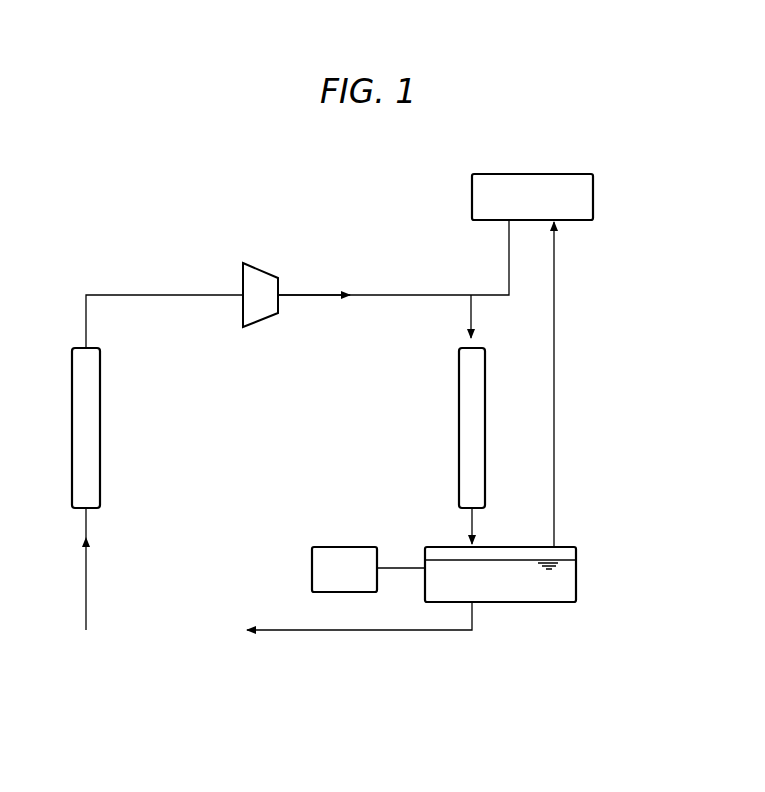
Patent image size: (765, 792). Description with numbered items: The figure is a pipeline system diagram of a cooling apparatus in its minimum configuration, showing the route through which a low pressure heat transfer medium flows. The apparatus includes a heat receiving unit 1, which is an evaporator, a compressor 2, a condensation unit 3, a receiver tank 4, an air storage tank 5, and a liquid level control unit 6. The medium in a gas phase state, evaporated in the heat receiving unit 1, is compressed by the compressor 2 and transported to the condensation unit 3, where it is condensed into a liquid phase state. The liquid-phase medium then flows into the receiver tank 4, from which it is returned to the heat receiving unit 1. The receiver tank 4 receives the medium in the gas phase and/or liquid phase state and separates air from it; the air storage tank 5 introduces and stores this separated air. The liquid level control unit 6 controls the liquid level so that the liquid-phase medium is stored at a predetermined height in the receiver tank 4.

The heat receiving unit 1 is at (95, 430).
The compressor 2 is at (266, 275).
The condensation unit 3 is at (462, 412).
The receiver tank 4 is at (540, 602).
The air storage tank 5 is at (595, 189).
The liquid level control unit 6 is at (335, 552).